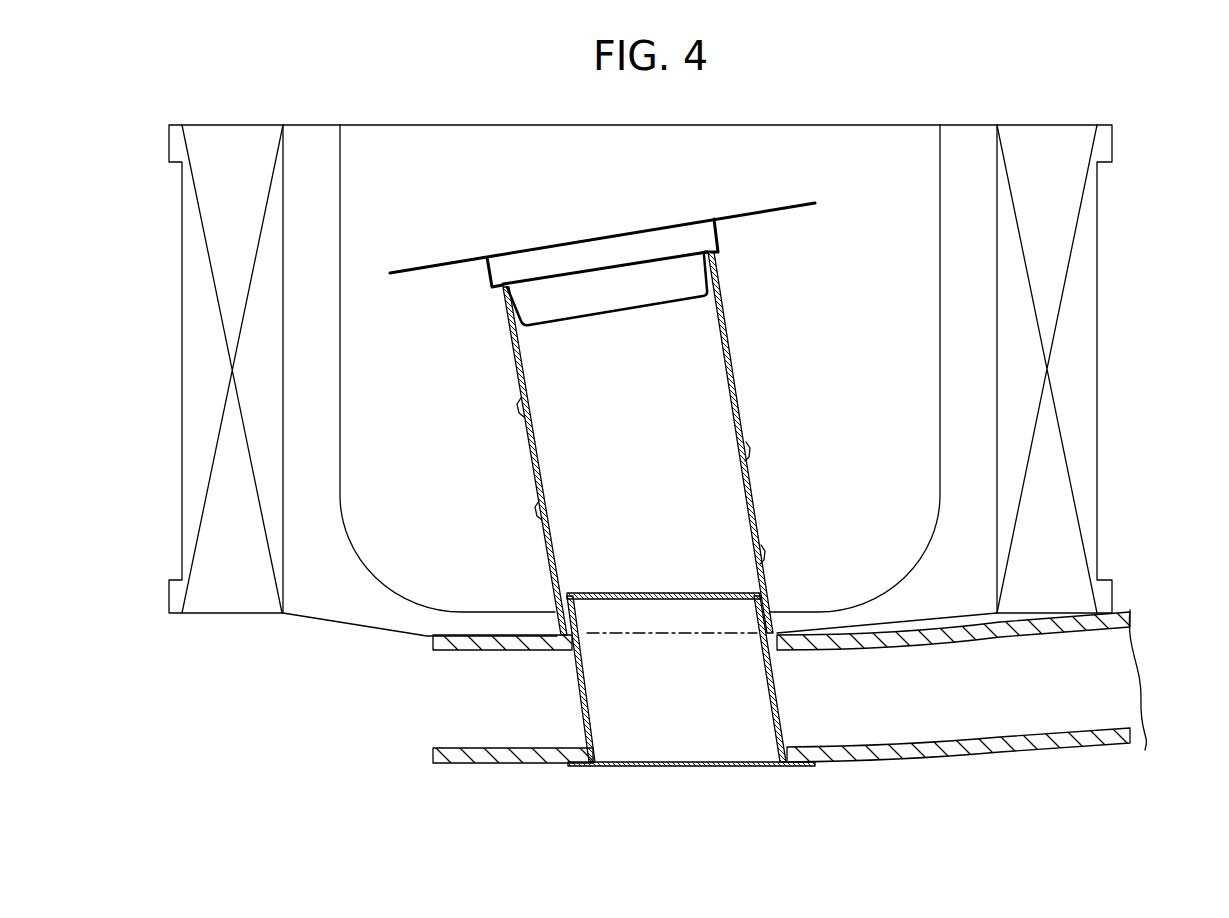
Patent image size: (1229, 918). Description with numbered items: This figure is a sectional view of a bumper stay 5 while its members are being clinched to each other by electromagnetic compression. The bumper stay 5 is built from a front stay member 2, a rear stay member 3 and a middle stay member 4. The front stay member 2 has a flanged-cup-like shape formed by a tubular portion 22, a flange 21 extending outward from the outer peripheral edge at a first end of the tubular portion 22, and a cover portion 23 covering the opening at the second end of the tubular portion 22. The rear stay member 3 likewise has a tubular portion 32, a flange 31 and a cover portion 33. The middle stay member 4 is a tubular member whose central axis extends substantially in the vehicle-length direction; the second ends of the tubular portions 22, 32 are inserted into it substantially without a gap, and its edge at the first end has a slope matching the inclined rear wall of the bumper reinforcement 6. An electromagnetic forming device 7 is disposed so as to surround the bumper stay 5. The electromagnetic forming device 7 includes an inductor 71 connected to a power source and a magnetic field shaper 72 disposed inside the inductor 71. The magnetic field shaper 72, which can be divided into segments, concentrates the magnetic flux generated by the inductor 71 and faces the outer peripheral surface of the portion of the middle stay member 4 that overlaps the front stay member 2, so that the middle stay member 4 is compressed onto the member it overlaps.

The front stay member 2 is at (692, 729).
The flange 21 is at (663, 825).
The tubular portion 22 is at (768, 693).
The cover portion 23 is at (680, 599).
The rear stay member 3 is at (647, 243).
The flange 31 is at (762, 210).
The tubular portion 32 is at (715, 277).
The cover portion 33 is at (652, 303).
The middle stay member 4 is at (740, 398).
The bumper stay 5 is at (852, 479).
The bumper reinforcement 6 is at (1046, 767).
The electromagnetic forming device 7 is at (691, 380).
The inductor 71 is at (1098, 368).
The magnetic field shaper 72 is at (982, 312).